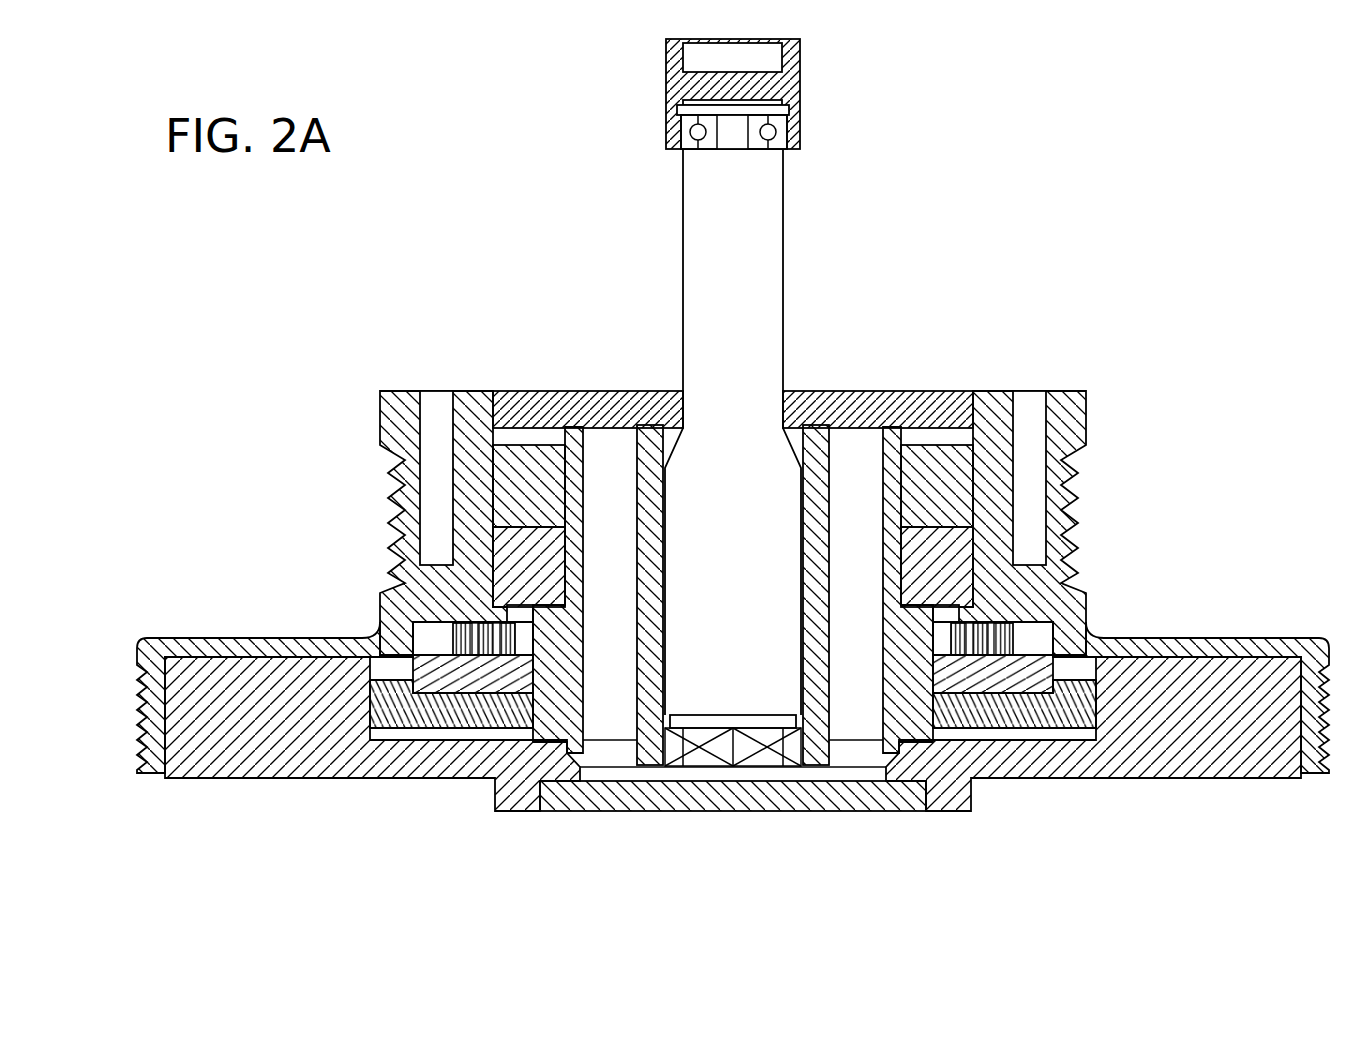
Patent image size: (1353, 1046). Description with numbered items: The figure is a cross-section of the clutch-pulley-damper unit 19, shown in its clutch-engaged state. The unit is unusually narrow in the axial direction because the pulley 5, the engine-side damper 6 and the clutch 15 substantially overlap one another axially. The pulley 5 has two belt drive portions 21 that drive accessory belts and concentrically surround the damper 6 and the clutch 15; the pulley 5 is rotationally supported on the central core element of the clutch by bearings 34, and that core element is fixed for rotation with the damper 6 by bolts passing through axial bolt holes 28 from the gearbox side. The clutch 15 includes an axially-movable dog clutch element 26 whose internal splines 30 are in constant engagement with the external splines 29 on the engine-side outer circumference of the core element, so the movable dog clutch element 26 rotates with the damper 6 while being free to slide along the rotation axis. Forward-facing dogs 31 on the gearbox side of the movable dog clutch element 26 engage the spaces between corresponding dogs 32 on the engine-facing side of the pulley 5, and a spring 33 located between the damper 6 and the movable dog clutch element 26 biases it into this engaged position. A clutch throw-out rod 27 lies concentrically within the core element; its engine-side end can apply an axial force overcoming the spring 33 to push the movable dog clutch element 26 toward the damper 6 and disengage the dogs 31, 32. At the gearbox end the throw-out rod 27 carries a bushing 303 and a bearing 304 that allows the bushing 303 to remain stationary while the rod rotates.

The clutch-pulley-damper unit 19 is at (1087, 135).
The pulley 5 is at (405, 391).
The damper 6 is at (247, 778).
The clutch 15 is at (818, 445).
The belt drive portions 21 is at (385, 593).
The movable dog clutch element 26 is at (487, 697).
The clutch throw-out rod 27 is at (717, 265).
The axial bolt holes 28 is at (608, 457).
The external splines 29 is at (942, 642).
The internal splines 30 is at (942, 642).
The forward-facing dogs 31 is at (1035, 635).
The dogs 32 is at (1035, 635).
The spring 33 is at (757, 760).
The bearings 34 is at (953, 568).
The bushing 303 is at (667, 92).
The bearing 304 is at (681, 140).